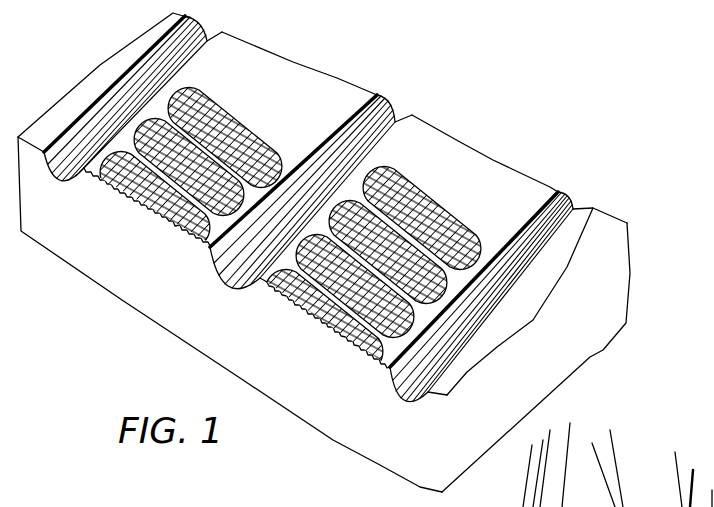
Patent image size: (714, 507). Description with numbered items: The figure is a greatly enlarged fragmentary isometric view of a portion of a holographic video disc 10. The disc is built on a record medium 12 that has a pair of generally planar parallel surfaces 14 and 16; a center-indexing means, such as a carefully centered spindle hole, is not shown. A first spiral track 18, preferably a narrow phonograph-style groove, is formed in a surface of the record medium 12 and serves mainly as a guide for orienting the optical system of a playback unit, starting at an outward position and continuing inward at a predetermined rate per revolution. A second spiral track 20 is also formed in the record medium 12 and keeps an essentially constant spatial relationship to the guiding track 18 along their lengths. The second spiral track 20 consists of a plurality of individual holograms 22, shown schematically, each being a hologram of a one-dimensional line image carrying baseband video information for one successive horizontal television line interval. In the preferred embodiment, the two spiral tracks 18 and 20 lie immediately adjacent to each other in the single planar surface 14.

The holographic video disc 10 is at (350, 251).
The record medium 12 is at (590, 355).
The planar surface 14 is at (527, 188).
The planar surface 16 is at (338, 446).
The first spiral track 18 is at (205, 37).
The second spiral track 20 is at (293, 66).
The hologram 22 is at (237, 125).